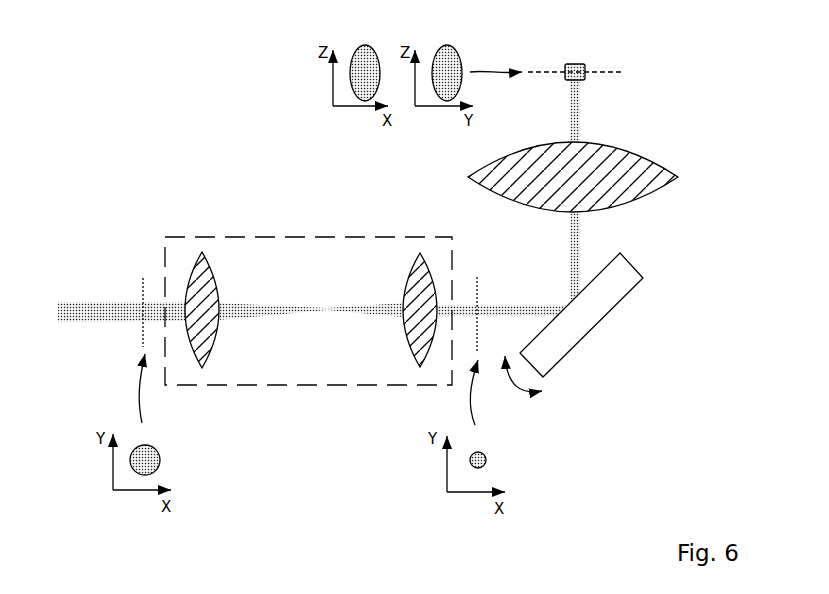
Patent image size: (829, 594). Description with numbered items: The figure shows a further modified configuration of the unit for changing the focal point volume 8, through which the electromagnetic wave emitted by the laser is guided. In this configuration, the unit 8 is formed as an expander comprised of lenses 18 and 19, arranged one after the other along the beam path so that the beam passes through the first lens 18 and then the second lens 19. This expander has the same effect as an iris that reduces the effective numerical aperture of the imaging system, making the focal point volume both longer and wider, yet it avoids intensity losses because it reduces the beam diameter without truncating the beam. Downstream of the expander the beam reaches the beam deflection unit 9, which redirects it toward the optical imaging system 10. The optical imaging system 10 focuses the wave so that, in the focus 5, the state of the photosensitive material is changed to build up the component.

The focus 5 is at (598, 66).
The unit for changing the focal point volume 8 is at (257, 392).
The beam deflection unit 9 is at (626, 306).
The optical imaging system 10 is at (467, 177).
The lens 18 is at (196, 270).
The lens 19 is at (404, 268).